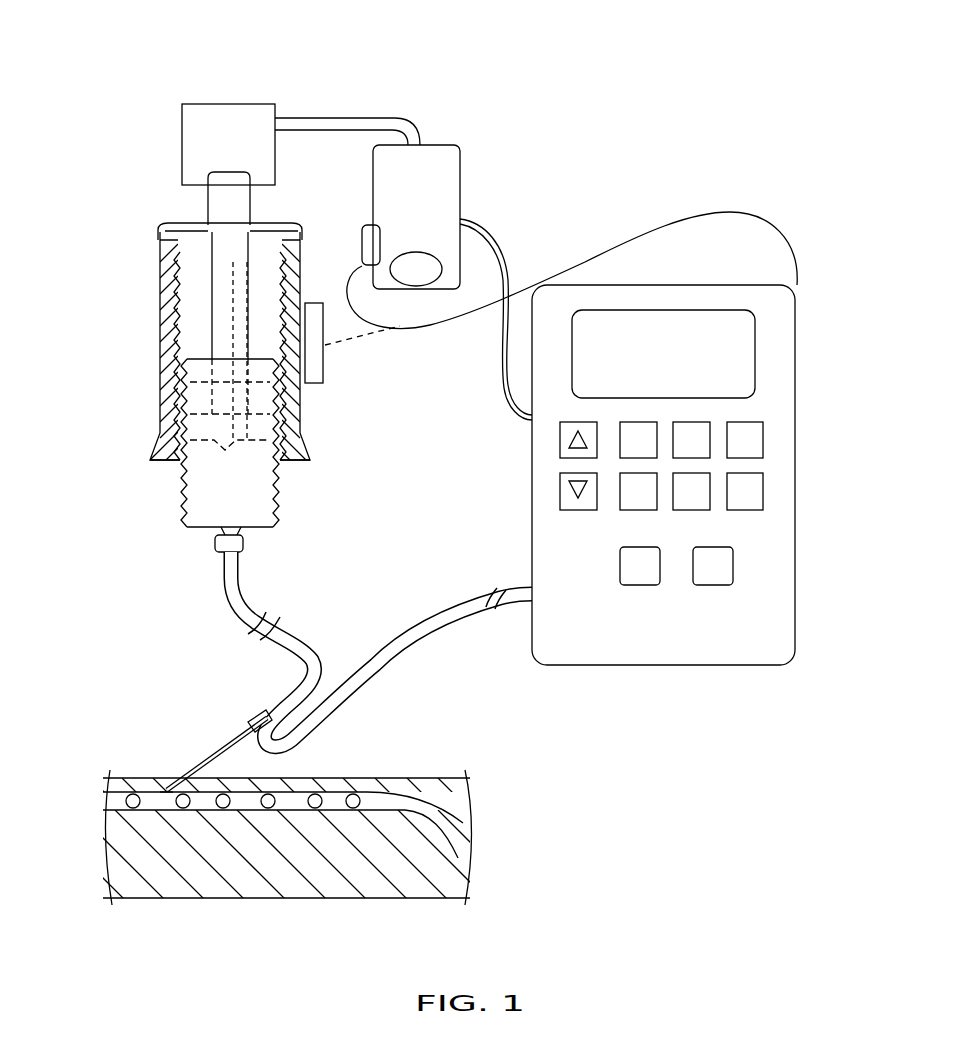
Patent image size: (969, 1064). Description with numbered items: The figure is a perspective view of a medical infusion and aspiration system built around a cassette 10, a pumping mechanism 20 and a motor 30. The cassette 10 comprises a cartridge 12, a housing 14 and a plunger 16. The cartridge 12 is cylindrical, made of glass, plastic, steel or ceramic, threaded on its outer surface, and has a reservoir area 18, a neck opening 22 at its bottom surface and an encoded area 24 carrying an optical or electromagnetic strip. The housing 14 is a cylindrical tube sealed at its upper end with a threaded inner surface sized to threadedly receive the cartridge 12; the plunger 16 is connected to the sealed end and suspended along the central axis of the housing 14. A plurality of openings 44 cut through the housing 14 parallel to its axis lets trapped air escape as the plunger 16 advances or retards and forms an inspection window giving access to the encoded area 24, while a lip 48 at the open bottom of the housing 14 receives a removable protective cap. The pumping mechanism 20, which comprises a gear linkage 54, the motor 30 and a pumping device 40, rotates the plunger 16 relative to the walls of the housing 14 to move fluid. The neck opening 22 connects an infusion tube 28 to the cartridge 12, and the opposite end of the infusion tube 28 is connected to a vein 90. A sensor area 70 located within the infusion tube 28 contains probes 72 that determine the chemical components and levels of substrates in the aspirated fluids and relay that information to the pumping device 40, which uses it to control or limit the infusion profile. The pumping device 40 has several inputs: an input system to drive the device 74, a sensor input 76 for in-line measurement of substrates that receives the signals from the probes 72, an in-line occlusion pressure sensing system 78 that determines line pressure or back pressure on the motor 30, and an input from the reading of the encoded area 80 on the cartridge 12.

The cassette 10 is at (92, 145).
The cartridge 12 is at (178, 478).
The housing 14 is at (160, 268).
The plunger 16 is at (220, 247).
The reservoir area 18 is at (255, 492).
The pumping mechanism 20 is at (148, 72).
The neck opening 22 is at (216, 534).
The encoded area 24 is at (196, 368).
The infusion tube 28 is at (236, 597).
The motor 30 is at (440, 152).
The pumping device 40 is at (795, 458).
The openings 44 is at (236, 324).
The lip 48 is at (160, 444).
The gear linkage 54 is at (228, 106).
The sensor area 70 is at (262, 712).
The probes 72 is at (245, 720).
The input system to drive the device 74 is at (556, 418).
The sensor input 76 is at (522, 610).
The in-line occlusion pressure sensing system 78 is at (688, 212).
The input from the reading of the encoded area 80 is at (330, 368).
The vein 90 is at (455, 868).